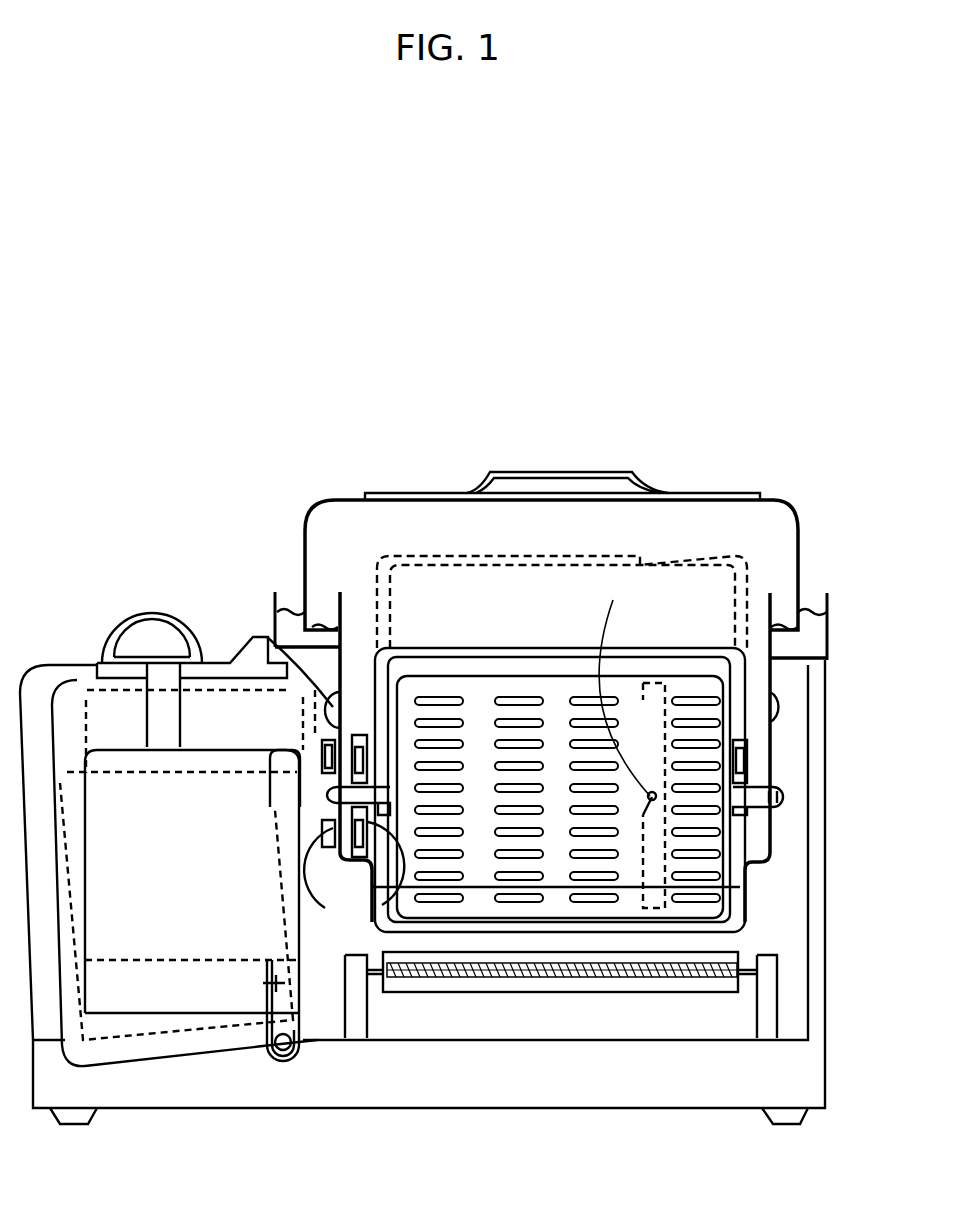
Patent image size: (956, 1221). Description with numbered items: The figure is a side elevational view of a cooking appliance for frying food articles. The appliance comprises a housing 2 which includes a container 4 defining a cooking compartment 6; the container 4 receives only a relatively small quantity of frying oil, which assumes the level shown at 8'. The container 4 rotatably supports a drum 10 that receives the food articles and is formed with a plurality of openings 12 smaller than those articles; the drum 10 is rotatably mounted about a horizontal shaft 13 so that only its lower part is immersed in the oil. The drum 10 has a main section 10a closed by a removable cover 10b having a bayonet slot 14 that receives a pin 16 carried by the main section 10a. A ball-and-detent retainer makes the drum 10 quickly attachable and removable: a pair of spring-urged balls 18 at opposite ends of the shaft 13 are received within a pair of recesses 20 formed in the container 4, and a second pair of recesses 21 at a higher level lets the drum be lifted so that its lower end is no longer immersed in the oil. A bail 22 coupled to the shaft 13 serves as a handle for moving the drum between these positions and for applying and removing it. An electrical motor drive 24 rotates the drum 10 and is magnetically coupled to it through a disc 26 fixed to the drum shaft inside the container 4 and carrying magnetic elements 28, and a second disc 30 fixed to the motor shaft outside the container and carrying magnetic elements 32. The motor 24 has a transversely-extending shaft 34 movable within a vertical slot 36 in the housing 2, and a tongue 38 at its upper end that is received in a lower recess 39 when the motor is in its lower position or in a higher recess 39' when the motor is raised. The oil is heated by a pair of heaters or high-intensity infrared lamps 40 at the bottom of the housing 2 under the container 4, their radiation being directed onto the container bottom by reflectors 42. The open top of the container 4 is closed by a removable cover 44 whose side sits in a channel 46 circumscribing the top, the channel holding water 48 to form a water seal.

The housing 2 is at (834, 669).
The container 4 is at (790, 756).
The cooking compartment 6 is at (733, 840).
The frying oil level 8' is at (766, 873).
The drum 10 is at (563, 761).
The main section 10a is at (470, 687).
The removable cover 10b is at (683, 687).
The openings 12 is at (577, 703).
The horizontal shaft 13 is at (365, 655).
The bayonet slot 14 is at (623, 684).
The pin 16 is at (640, 690).
The spring-urged balls 18 is at (785, 790).
The recesses 20 is at (787, 793).
The second pair of recesses 21 is at (263, 637).
The bail 22 is at (536, 657).
The electrical motor drive 24 is at (158, 927).
The disc 26 is at (368, 878).
The magnetic elements 28 is at (354, 877).
The second disc 30 is at (330, 800).
The magnetic elements 32 is at (322, 840).
The transversely-extending shaft 34 is at (285, 1048).
The vertical slot 36 is at (283, 983).
The tongue 38 is at (310, 706).
The lower recess 39 is at (257, 827).
The higher recess 39' is at (192, 682).
The infrared radiation lamps 40 is at (723, 967).
The reflectors 42 is at (540, 993).
The removable cover 44 is at (726, 494).
The channel 46 is at (828, 598).
The water 48 is at (802, 644).